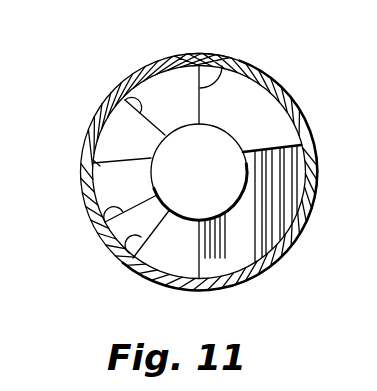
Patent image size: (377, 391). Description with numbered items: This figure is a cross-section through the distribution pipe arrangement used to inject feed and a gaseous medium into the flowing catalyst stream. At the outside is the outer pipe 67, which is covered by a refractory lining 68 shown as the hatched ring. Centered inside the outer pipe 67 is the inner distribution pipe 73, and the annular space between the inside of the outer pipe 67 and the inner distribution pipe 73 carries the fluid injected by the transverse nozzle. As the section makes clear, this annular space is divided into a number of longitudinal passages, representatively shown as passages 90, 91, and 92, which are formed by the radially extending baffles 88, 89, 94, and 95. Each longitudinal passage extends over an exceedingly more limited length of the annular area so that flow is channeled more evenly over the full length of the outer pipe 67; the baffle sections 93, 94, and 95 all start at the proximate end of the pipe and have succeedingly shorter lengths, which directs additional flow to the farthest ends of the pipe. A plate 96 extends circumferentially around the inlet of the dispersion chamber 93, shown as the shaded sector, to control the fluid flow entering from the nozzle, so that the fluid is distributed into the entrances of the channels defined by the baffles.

The outer pipe 67 is at (158, 283).
The refractory lining 68 is at (215, 62).
The inner distribution pipe 73 is at (228, 130).
The baffle 88 is at (229, 69).
The baffle 89 is at (131, 89).
The longitudinal passage 90 is at (159, 86).
The longitudinal passage 91 is at (110, 140).
The longitudinal passage 92 is at (105, 188).
The baffle section 93 is at (116, 252).
The baffle 94 is at (101, 217).
The baffle 95 is at (105, 164).
The plate 96 is at (269, 256).